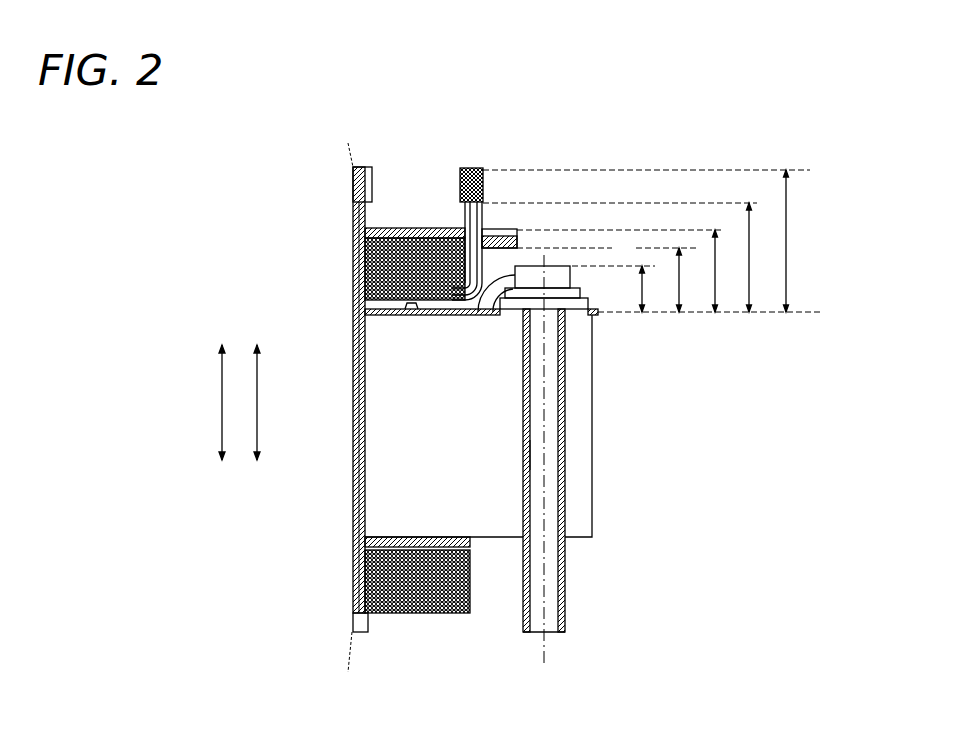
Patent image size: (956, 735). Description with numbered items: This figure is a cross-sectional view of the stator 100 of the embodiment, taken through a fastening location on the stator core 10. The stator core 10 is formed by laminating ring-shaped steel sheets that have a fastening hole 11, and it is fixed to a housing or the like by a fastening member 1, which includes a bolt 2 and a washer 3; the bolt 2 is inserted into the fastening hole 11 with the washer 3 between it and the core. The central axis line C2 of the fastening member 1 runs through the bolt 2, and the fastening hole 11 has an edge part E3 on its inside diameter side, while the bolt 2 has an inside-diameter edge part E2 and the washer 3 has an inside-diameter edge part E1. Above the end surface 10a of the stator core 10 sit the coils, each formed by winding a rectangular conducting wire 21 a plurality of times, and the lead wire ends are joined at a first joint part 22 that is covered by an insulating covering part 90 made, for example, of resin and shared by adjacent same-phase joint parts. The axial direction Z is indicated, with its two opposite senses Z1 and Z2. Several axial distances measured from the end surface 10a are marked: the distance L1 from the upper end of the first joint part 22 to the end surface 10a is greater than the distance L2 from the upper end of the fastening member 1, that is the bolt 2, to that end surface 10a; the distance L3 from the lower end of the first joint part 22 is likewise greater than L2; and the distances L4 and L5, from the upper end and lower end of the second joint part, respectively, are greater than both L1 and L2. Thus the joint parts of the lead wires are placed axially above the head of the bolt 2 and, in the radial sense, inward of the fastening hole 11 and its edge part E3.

The stator 100 is at (207, 176).
The stator core 10 is at (592, 395).
The end surface 10a is at (411, 312).
The fastening hole 11 is at (560, 468).
The rectangular conducting wire 21 is at (519, 238).
The first joint part 22 is at (456, 185).
The insulating covering part 90 is at (470, 167).
The fastening member 1 is at (603, 293).
The bolt 2 is at (560, 280).
The washer 3 is at (584, 302).
The edge part E1 is at (493, 312).
The edge part E2 is at (478, 312).
The edge part E3 is at (536, 455).
The central axis line C2 is at (546, 652).
The axial distance L1 is at (731, 271).
The axial distance L2 is at (660, 289).
The axial distance L3 is at (695, 280).
The axial distance L4 is at (805, 241).
The axial distance L5 is at (766, 257).
The axial direction Z is at (212, 402).
The axial direction one side Z1 is at (242, 373).
The axial direction other side Z2 is at (242, 431).